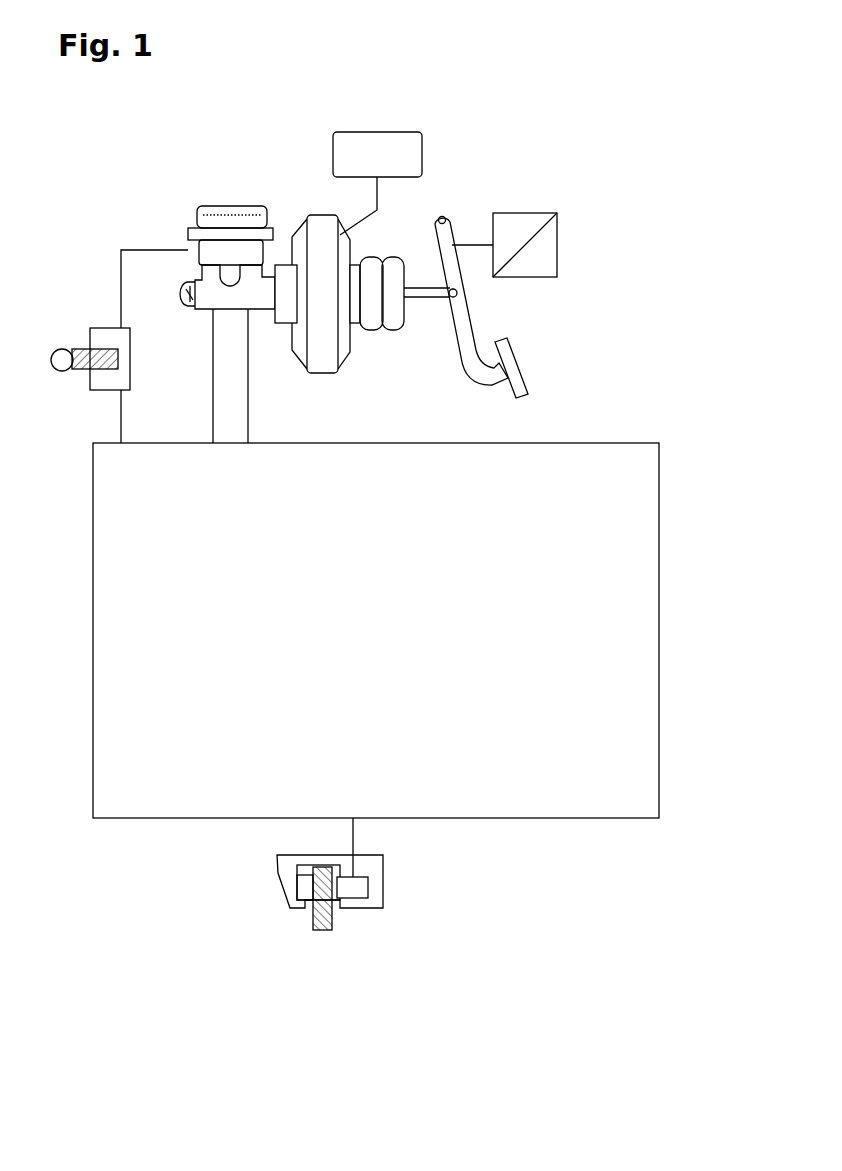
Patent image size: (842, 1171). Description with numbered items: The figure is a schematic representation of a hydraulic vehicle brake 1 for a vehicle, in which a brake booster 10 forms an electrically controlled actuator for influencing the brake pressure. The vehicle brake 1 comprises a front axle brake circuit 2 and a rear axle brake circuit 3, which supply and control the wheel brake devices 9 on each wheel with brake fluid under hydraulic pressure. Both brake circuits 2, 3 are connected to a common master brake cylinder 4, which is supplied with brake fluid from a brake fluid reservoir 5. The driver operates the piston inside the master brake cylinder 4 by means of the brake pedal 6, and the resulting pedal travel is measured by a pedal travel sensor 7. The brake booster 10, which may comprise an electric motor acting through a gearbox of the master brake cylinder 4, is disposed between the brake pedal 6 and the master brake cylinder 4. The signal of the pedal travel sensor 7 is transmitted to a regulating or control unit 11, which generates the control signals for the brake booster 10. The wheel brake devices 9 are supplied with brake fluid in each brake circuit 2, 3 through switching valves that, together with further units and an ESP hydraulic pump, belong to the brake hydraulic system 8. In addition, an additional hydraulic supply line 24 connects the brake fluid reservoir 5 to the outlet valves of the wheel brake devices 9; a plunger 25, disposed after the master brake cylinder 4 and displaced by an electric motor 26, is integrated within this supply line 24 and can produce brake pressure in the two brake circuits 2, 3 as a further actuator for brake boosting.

The hydraulic vehicle brake 1 is at (530, 146).
The front axle brake circuit 2 is at (205, 404).
The rear axle brake circuit 3 is at (258, 404).
The master brake cylinder 4 is at (183, 294).
The brake fluid reservoir 5 is at (196, 222).
The brake pedal 6 is at (517, 363).
The pedal travel sensor 7 is at (557, 243).
The brake hydraulic system 8 is at (597, 820).
The wheel brake devices 9 is at (355, 934).
The brake booster 10 is at (343, 357).
The control unit 11 is at (333, 153).
The hydraulic supply line 24 is at (121, 278).
The plunger 25 is at (120, 337).
The electric motor 26 is at (58, 372).